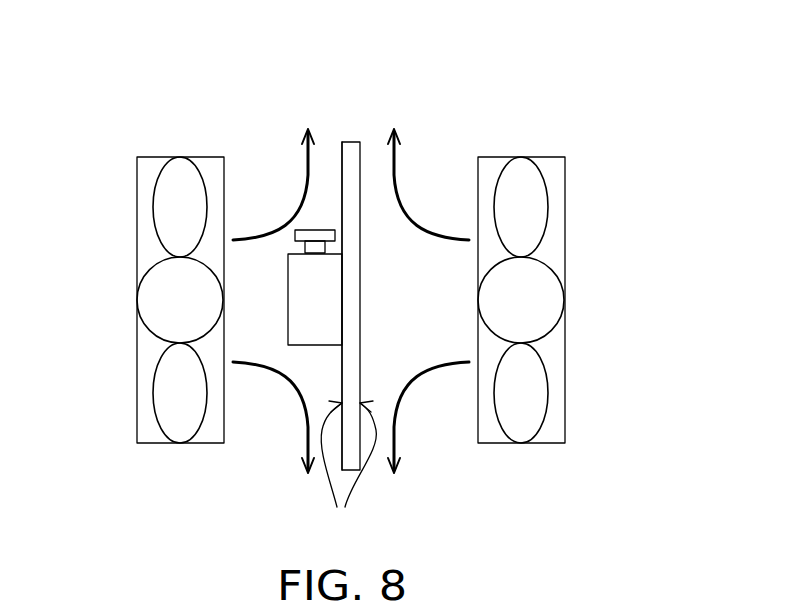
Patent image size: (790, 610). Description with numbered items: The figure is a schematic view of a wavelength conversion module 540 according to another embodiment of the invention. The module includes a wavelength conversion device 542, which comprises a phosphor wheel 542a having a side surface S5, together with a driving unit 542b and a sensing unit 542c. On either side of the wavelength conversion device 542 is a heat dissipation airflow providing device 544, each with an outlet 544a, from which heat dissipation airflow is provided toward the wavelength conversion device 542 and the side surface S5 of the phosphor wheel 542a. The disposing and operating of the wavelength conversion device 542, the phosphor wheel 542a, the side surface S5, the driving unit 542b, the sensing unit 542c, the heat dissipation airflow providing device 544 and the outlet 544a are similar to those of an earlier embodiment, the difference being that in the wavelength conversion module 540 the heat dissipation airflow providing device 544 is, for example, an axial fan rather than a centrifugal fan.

The wavelength conversion module 540 is at (688, 499).
The wavelength conversion device 542 is at (374, 170).
The phosphor wheel 542a is at (355, 152).
The driving unit 542b is at (305, 282).
The sensing unit 542c is at (317, 232).
The heat dissipation airflow providing device 544 is at (136, 342).
The outlet 544a is at (221, 248).
The side surface S5 is at (348, 471).